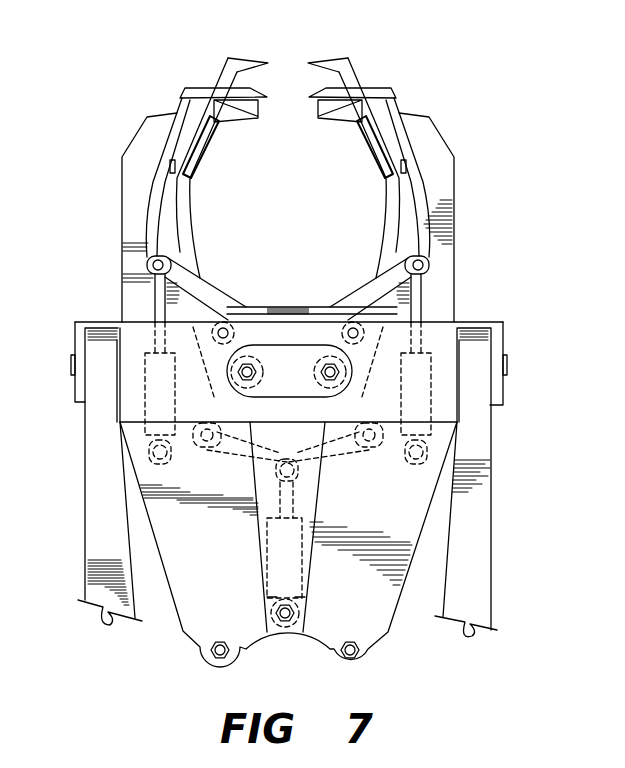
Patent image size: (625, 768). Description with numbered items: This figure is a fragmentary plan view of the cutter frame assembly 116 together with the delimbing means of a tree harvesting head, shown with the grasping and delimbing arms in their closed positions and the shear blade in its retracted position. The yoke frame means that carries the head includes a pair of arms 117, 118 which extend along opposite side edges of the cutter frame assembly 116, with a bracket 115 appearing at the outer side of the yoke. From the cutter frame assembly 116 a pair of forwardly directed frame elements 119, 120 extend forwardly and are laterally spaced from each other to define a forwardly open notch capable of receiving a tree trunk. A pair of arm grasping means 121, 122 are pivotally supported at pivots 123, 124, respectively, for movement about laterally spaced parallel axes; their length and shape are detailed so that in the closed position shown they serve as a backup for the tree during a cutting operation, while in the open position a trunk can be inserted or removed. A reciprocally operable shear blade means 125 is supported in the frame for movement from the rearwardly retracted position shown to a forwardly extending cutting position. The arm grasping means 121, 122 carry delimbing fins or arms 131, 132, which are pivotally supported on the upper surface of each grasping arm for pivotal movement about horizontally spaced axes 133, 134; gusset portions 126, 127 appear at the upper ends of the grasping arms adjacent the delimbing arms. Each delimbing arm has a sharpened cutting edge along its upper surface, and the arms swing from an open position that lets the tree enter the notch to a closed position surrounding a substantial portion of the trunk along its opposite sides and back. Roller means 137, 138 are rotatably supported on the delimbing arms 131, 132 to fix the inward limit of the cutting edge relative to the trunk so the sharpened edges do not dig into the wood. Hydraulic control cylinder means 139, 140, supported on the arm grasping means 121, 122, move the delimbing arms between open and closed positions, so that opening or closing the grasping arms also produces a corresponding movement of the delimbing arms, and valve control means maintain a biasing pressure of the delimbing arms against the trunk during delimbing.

The mounting bracket 115 is at (72, 366).
The cutter frame assembly 116 is at (226, 555).
The arm 117 is at (97, 488).
The arm 118 is at (478, 516).
The forwardly directed frame element 119 is at (140, 137).
The forwardly directed frame element 120 is at (437, 160).
The arm grasping means 121 is at (200, 92).
The arm grasping means 122 is at (397, 100).
The pivot 123 is at (248, 383).
The pivot 124 is at (333, 383).
The shear blade means 125 is at (267, 306).
The left gusset 126 is at (237, 118).
The right gusset 127 is at (334, 116).
The delimbing arm 131 is at (231, 54).
The delimbing arm 132 is at (353, 63).
The pivot axis 133 is at (228, 330).
The pivot axis 134 is at (353, 322).
The roller means 137 is at (198, 158).
The roller means 138 is at (377, 148).
The hydraulic control cylinder means 139 is at (157, 301).
The hydraulic control cylinder means 140 is at (425, 307).